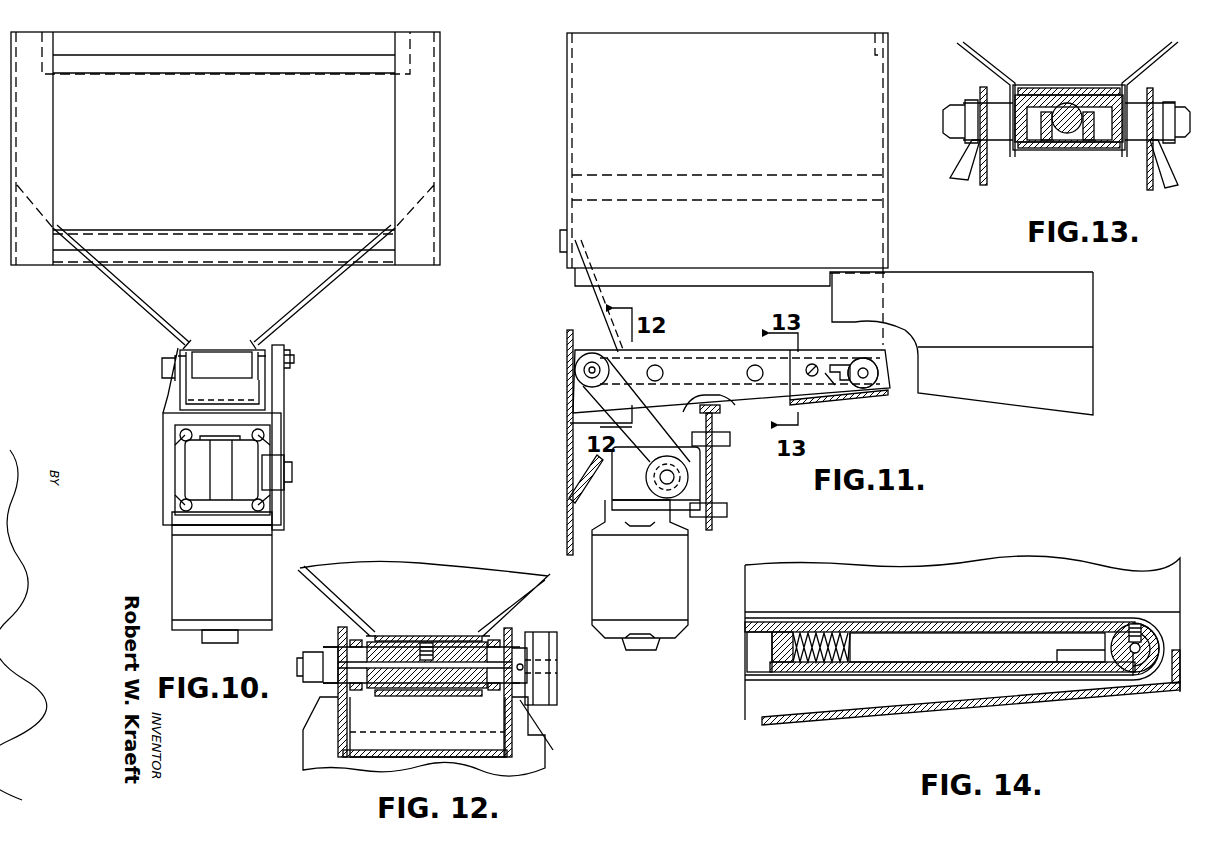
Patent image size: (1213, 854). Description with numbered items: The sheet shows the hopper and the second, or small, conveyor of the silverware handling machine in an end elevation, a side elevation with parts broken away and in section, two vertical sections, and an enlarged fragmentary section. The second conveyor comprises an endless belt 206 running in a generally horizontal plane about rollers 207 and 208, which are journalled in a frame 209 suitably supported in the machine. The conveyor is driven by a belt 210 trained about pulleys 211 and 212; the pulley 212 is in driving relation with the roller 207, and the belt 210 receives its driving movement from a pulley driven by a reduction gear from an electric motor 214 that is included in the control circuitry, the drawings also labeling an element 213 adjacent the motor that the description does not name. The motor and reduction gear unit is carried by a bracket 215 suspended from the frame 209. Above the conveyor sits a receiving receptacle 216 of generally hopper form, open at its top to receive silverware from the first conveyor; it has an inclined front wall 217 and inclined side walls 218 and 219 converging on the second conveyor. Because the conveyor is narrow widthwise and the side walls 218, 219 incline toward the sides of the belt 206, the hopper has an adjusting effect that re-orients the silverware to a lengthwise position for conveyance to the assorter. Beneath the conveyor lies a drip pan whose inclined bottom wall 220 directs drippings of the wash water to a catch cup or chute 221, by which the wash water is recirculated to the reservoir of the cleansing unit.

In FIG. 10, the endless belt 206 is at (208, 353).
In FIG. 12, the endless belt 206 is at (405, 640).
In FIG. 11, the endless belt 206 is at (858, 358).
In FIG. 13, the endless belt 206 is at (1052, 92).
In FIG. 14, the endless belt 206 is at (1027, 628).
In FIG. 10, the roller 207 is at (209, 380).
In FIG. 12, the roller 207 is at (405, 680).
In FIG. 11, the roller 208 is at (870, 360).
In FIG. 14, the roller 208 is at (1148, 635).
In FIG. 11, the frame 209 is at (848, 378).
In FIG. 13, the frame 209 is at (1075, 148).
In FIG. 14, the frame 209 is at (865, 625).
In FIG. 10, the belt 210 is at (283, 423).
In FIG. 12, the belt 210 is at (548, 733).
In FIG. 11, the belt 210 is at (595, 400).
In FIG. 10, the pulley 211 is at (291, 358).
In FIG. 12, the pulley 211 is at (560, 680).
In FIG. 11, the pulley 211 is at (575, 368).
In FIG. 10, the pulley 212 is at (292, 480).
In FIG. 11, the pulley 212 is at (690, 464).
In FIG. 10, the motor 213 is at (200, 465).
In FIG. 11, the motor 213 is at (628, 489).
In FIG. 10, the electric motor 214 is at (238, 577).
In FIG. 11, the electric motor 214 is at (662, 581).
In FIG. 10, the bracket 215 is at (165, 412).
In FIG. 11, the bracket 215 is at (725, 400).
In FIG. 13, the bracket 215 is at (1165, 177).
In FIG. 10, the receiving receptacle 216 is at (240, 122).
In FIG. 11, the receiving receptacle 216 is at (745, 124).
In FIG. 11, the inclined front wall 217 is at (598, 292).
In FIG. 10, the inclined side wall 218 is at (125, 297).
In FIG. 10, the inclined side wall 219 is at (318, 298).
In FIG. 11, the inclined bottom wall 220 is at (815, 402).
In FIG. 14, the inclined bottom wall 220 is at (810, 712).
In FIG. 11, the catch cup or chute 221 is at (583, 462).